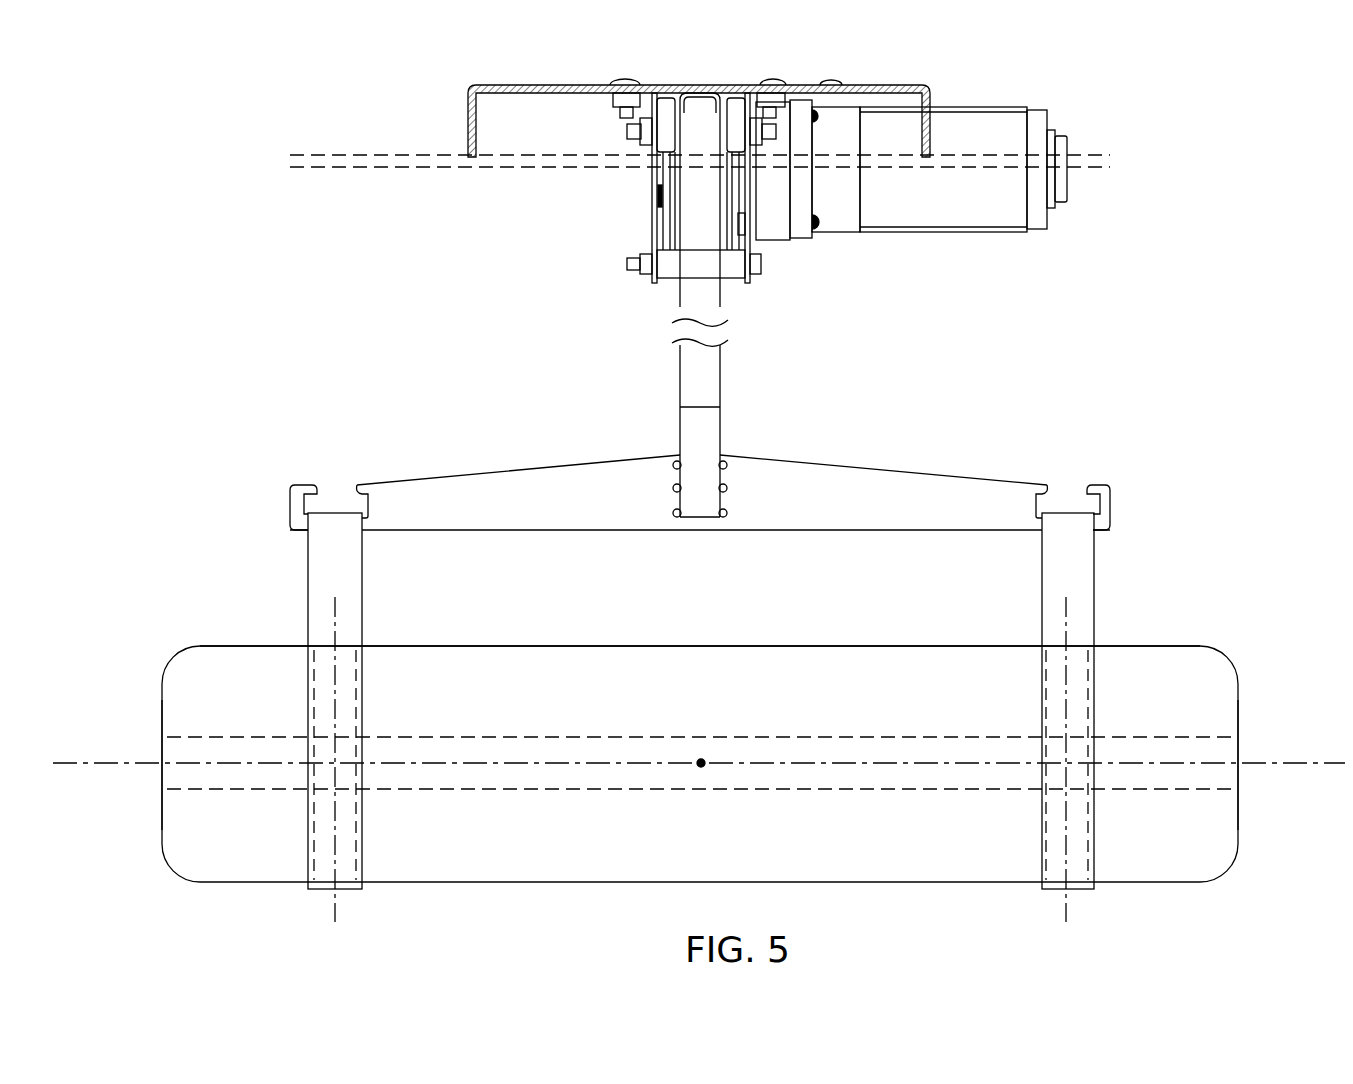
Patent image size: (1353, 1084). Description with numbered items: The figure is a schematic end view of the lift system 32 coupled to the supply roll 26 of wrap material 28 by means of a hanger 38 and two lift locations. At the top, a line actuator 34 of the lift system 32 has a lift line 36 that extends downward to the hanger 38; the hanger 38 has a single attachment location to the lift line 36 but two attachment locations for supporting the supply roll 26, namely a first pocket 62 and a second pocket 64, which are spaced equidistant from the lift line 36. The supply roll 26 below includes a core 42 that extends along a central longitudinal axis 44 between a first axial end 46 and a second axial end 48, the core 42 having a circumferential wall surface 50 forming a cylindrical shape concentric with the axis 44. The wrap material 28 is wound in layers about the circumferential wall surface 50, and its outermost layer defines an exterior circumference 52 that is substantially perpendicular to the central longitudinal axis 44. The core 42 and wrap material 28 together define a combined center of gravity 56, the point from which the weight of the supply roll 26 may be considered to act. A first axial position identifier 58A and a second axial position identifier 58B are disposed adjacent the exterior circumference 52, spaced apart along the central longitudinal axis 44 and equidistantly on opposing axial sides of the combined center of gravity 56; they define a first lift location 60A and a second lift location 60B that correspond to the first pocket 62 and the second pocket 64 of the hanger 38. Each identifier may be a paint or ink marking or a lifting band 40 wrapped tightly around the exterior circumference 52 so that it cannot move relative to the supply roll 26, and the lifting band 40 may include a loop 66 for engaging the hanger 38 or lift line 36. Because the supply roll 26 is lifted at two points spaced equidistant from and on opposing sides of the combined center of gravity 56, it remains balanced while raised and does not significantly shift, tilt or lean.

The supply roll 26 is at (699, 761).
The wrap material 28 is at (865, 818).
The lift system 32 is at (767, 184).
The line actuator 34 is at (985, 127).
The lift line 36 is at (697, 370).
The hanger 38 is at (855, 487).
The lifting band 40 is at (307, 565).
The core 42 is at (477, 790).
The central longitudinal axis 44 is at (73, 765).
The first axial end 46 is at (1240, 783).
The second axial end 48 is at (162, 778).
The circumferential wall surface 50 is at (545, 790).
The exterior circumference 52 is at (604, 645).
The combined center of gravity 56 is at (701, 763).
The first axial position identifier 58A is at (1088, 688).
The second axial position identifier 58B is at (356, 700).
The first lift location 60A is at (1066, 915).
The second lift location 60B is at (335, 922).
The first pocket 62 is at (1067, 488).
The second pocket 64 is at (338, 483).
The loop 66 is at (762, 753).